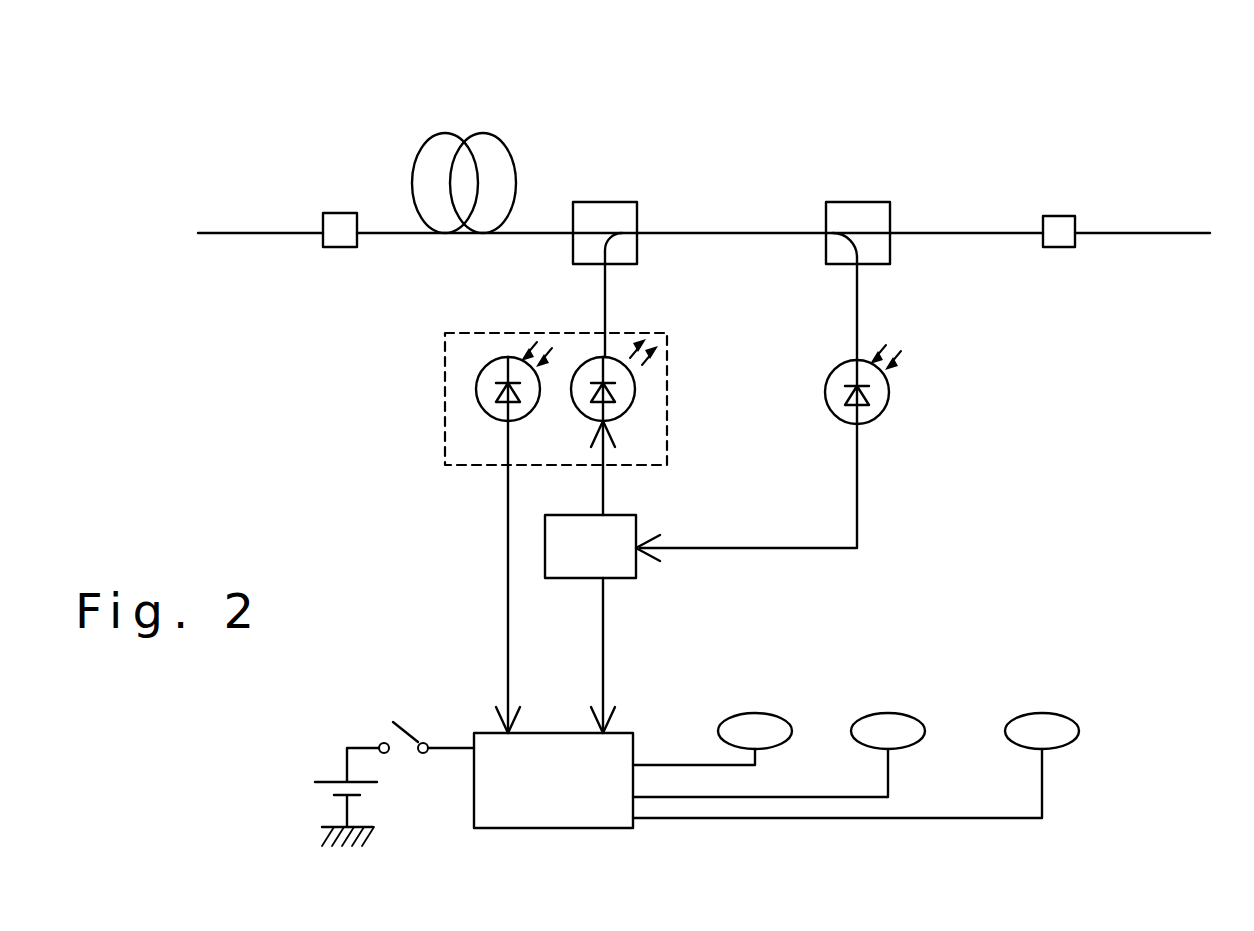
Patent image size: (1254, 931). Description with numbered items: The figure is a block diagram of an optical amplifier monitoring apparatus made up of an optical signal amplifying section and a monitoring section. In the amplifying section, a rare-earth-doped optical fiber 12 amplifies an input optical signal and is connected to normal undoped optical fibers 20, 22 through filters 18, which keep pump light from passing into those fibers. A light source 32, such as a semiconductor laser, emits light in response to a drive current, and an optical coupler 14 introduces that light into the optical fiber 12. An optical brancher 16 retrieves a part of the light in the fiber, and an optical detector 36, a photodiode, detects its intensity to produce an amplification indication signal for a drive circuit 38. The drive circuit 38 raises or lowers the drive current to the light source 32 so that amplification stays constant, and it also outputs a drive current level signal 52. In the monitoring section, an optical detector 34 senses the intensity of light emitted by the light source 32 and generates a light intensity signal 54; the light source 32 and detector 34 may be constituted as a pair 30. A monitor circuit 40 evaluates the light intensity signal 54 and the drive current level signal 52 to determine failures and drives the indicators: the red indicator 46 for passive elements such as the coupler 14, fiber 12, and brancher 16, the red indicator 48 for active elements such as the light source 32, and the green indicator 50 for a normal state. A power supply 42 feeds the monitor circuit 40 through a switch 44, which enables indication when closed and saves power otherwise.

The optical fiber 12 is at (453, 132).
The optical coupler 14 is at (607, 201).
The optical brancher 16 is at (860, 201).
The filters 18 is at (338, 213).
The optical fiber 20 is at (218, 232).
The optical fiber 22 is at (1163, 233).
The pair 30 is at (667, 390).
The light source 32 is at (625, 413).
The optical detector 34 is at (490, 412).
The optical detector 36 is at (880, 412).
The drive circuit 38 is at (636, 565).
The monitor circuit 40 is at (474, 783).
The power supply 42 is at (325, 777).
The switch 44 is at (393, 722).
The red indicator 46 is at (757, 712).
The red indicator 48 is at (890, 712).
The green indicator 50 is at (1043, 712).
The drive current level signal 52 is at (603, 655).
The light intensity signal 54 is at (507, 655).